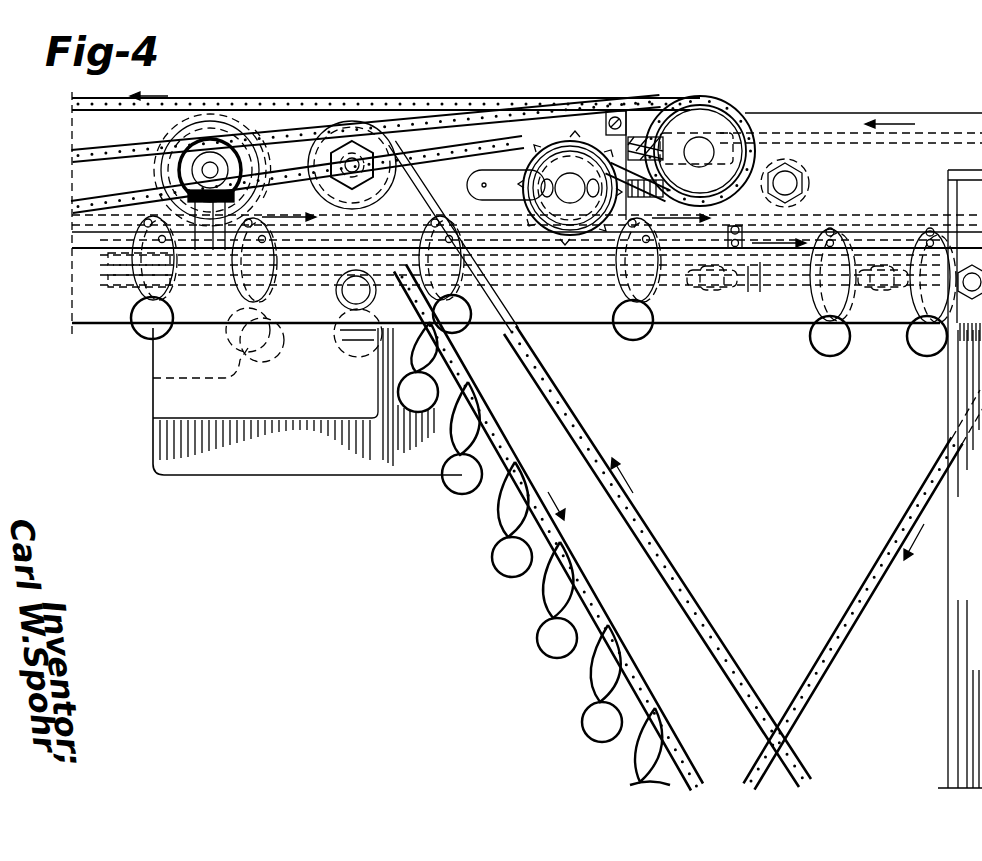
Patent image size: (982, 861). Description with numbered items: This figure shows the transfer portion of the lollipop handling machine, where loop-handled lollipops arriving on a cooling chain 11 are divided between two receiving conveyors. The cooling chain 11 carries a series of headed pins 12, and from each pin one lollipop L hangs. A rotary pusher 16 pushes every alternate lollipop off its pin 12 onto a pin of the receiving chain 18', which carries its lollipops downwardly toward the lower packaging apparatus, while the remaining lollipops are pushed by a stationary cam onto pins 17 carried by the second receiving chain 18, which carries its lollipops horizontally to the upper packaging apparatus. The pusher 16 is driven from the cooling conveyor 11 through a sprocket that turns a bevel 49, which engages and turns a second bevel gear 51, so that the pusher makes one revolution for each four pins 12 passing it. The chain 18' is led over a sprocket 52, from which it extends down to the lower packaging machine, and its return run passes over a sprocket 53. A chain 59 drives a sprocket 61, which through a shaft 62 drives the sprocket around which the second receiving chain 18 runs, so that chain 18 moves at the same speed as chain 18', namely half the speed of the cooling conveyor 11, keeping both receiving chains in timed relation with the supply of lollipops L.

The cooling chain 11 is at (258, 222).
The headed pins 12 is at (745, 232).
The rotary pusher 16 is at (108, 283).
The pins 17 is at (712, 272).
The second receiving chain 18 is at (526, 166).
The receiving chain 18' is at (460, 438).
The bevel 49 is at (162, 183).
The second bevel gear 51 is at (170, 166).
The sprocket 52 is at (334, 335).
The sprocket 53 is at (383, 190).
The chain 59 is at (650, 103).
The sprocket 61 is at (498, 206).
The shaft 62 is at (578, 185).
The lollipop L is at (135, 333).